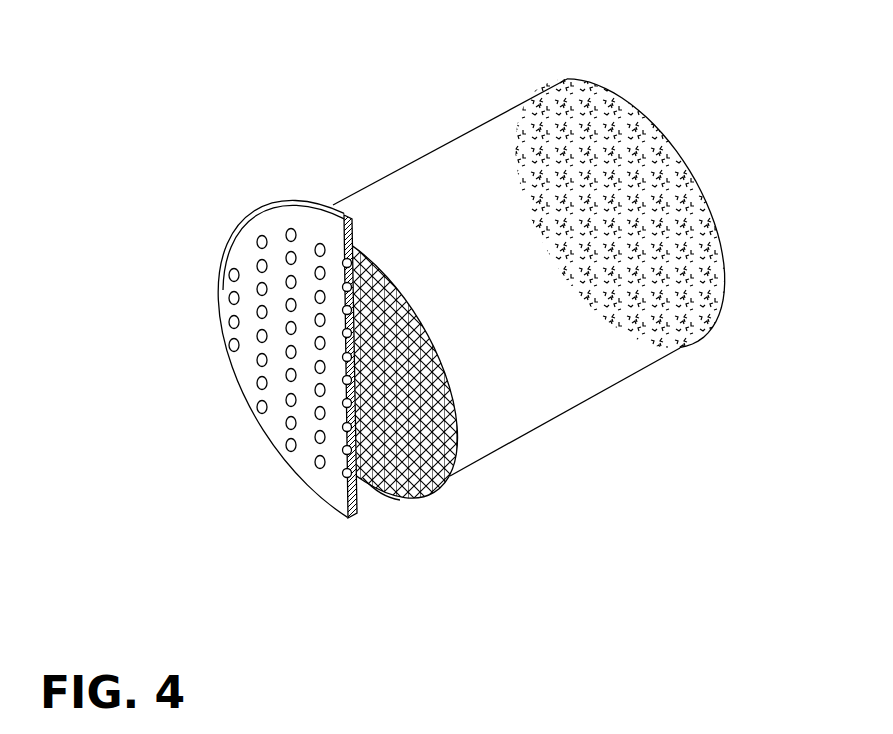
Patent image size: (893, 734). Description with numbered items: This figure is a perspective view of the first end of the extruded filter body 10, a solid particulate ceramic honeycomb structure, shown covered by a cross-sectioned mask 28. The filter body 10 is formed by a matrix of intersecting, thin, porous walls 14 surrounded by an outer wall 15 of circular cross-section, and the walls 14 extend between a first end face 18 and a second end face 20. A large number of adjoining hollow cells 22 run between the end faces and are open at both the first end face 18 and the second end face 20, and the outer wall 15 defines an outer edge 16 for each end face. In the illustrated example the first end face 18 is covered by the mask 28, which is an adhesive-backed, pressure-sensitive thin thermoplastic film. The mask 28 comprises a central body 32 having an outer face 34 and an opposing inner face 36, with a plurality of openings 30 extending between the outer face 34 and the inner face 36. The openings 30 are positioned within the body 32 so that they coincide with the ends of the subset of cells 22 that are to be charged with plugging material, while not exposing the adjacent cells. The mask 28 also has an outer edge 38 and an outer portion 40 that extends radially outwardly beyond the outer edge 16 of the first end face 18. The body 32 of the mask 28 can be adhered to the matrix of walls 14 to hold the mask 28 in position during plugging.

The filter body 10 is at (464, 310).
The walls 14 is at (370, 362).
The outer wall 15 is at (438, 165).
The outer edge 16 is at (372, 495).
The first end face 18 is at (455, 473).
The second end face 20 is at (697, 177).
The cells 22 is at (458, 403).
The mask 28 is at (348, 360).
The openings 30 is at (235, 358).
The central body 32 is at (252, 342).
The outer face 34 is at (272, 430).
The inner face 36 is at (312, 203).
The outer edge 38 is at (347, 217).
The outer portion 40 is at (247, 378).